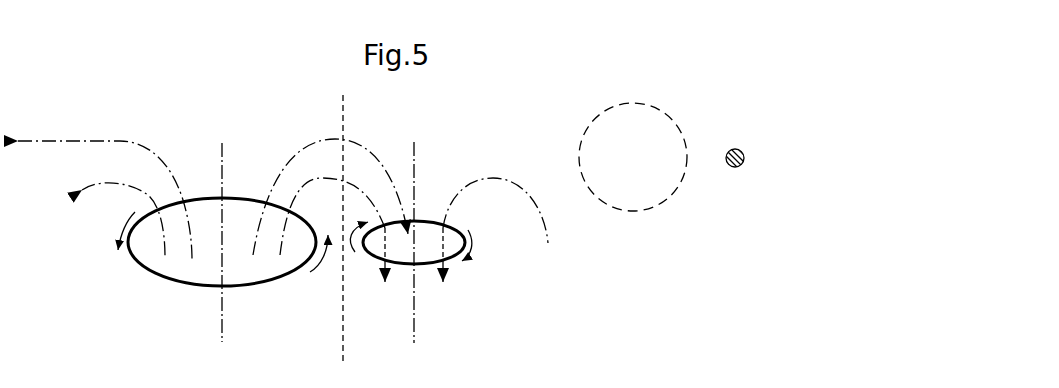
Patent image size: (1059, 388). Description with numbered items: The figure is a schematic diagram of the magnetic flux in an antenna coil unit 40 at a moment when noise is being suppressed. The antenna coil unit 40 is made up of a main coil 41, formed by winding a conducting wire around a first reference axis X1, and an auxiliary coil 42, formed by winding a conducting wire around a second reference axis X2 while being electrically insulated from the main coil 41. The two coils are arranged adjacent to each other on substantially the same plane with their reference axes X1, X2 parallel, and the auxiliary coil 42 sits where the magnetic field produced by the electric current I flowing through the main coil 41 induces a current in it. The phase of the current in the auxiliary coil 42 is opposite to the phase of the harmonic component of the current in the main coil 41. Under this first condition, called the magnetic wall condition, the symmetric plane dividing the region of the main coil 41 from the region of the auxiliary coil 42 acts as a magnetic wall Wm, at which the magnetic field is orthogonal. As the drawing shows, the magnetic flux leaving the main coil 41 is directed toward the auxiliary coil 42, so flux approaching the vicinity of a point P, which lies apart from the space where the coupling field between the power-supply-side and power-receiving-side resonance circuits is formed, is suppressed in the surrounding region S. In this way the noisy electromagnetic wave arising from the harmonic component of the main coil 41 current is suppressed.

The antenna coil unit 40 is at (284, 269).
The main coil 41 is at (180, 283).
The auxiliary coil 42 is at (423, 265).
The first reference axis X1 is at (218, 162).
The second reference axis X2 is at (413, 300).
The magnetic wall Wm is at (343, 117).
The region S is at (632, 102).
The point P is at (735, 148).
The electric current I is at (295, 242).